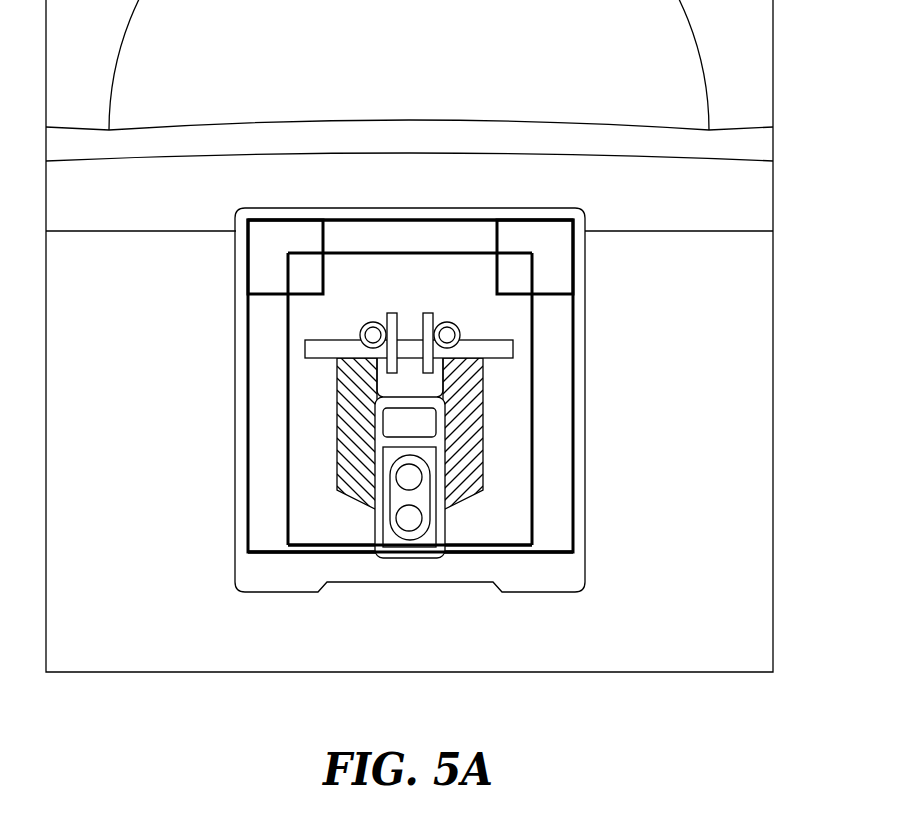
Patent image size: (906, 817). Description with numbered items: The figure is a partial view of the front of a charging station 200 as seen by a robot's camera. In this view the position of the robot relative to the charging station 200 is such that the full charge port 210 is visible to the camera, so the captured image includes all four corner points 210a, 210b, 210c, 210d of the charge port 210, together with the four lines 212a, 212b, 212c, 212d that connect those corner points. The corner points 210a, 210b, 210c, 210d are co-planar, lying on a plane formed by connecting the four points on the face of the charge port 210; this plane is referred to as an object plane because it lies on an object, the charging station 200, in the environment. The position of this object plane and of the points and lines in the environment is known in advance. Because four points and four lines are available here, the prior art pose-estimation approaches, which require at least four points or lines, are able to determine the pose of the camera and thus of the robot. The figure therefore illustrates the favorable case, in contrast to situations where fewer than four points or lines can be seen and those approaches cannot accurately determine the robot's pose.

The charging station 200 is at (531, 142).
The charge port 210 is at (552, 370).
The corner point 210a is at (288, 543).
The corner point 210b is at (533, 543).
The corner point 210c is at (532, 258).
The corner point 210d is at (287, 257).
The line 212a is at (288, 445).
The line 212b is at (532, 440).
The line 212c is at (390, 253).
The line 212d is at (355, 545).